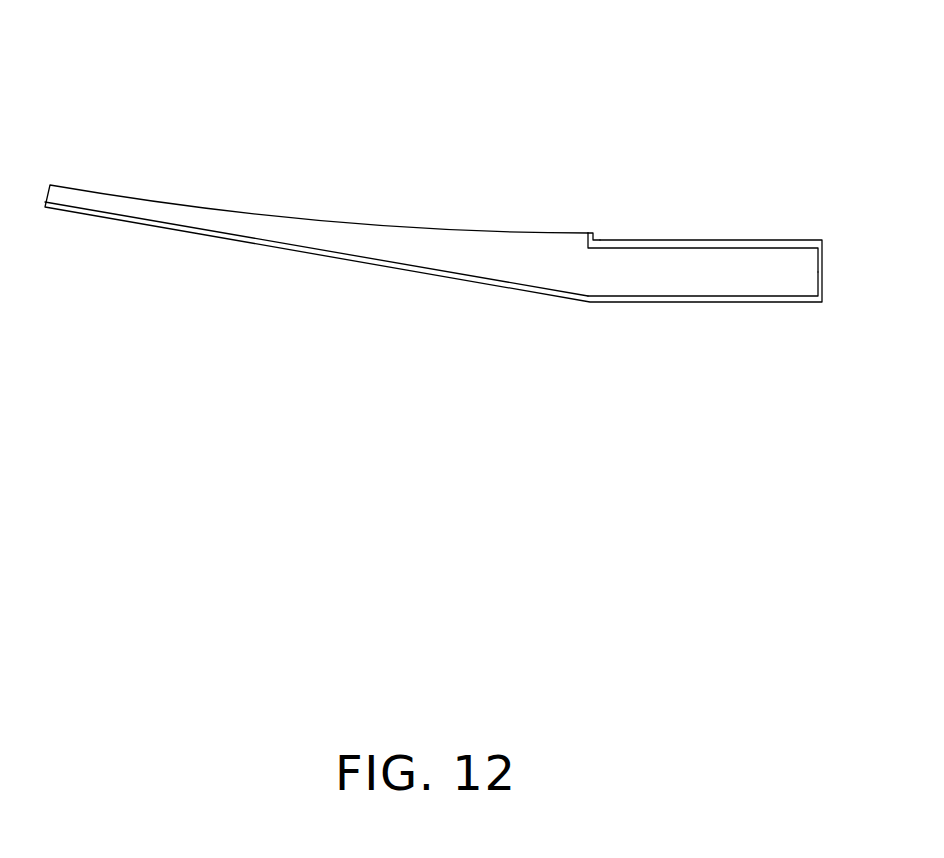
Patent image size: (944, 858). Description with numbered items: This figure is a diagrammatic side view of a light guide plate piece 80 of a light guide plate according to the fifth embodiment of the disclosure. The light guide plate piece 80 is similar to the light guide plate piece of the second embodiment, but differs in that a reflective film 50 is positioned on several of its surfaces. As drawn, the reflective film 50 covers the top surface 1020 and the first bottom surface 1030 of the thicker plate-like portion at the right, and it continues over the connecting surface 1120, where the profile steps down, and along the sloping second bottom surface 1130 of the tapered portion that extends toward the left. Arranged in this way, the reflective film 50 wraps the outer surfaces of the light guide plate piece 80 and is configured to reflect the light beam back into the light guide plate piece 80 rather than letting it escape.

The light guide plate piece 80 is at (435, 60).
The reflective film 50 is at (657, 240).
The top surface 1020 is at (745, 248).
The first bottom surface 1030 is at (722, 302).
The connecting surface 1120 is at (589, 239).
The second bottom surface 1130 is at (517, 285).